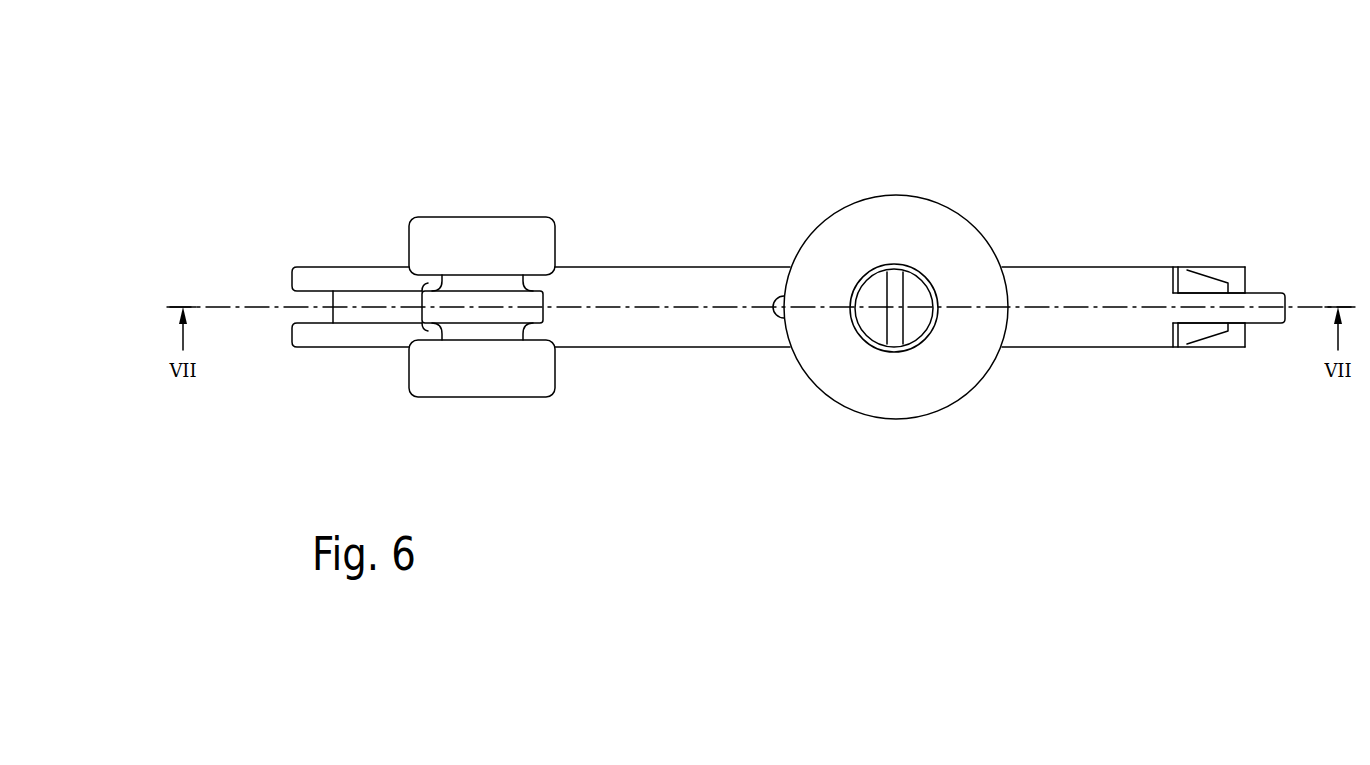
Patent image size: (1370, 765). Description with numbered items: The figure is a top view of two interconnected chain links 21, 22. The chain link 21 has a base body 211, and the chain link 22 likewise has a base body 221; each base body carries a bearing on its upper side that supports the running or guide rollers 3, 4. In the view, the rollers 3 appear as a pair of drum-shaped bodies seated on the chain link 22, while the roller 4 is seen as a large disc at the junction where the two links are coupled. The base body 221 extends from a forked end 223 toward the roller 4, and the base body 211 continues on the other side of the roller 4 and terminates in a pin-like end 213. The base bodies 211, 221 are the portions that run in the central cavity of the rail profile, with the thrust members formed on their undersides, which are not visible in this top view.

The chain link 21 is at (1152, 232).
The base body 211 is at (1123, 273).
The pin of second link member 213 is at (1265, 300).
The chain link 22 is at (532, 217).
The base body 221 is at (593, 277).
The fork of first link member 223 is at (338, 270).
The running or guide roller 3 is at (443, 236).
The running or guide roller 4 is at (895, 398).